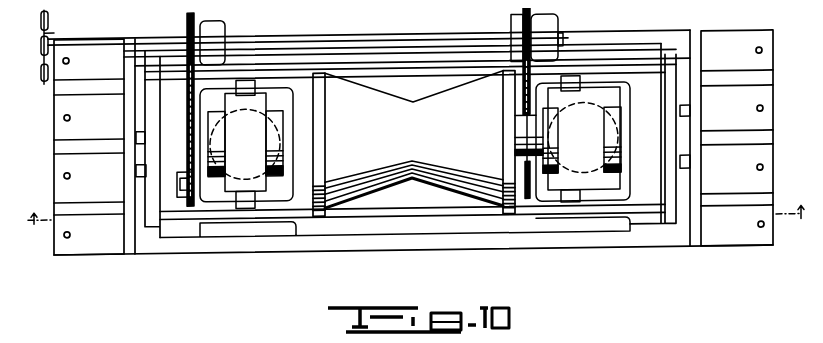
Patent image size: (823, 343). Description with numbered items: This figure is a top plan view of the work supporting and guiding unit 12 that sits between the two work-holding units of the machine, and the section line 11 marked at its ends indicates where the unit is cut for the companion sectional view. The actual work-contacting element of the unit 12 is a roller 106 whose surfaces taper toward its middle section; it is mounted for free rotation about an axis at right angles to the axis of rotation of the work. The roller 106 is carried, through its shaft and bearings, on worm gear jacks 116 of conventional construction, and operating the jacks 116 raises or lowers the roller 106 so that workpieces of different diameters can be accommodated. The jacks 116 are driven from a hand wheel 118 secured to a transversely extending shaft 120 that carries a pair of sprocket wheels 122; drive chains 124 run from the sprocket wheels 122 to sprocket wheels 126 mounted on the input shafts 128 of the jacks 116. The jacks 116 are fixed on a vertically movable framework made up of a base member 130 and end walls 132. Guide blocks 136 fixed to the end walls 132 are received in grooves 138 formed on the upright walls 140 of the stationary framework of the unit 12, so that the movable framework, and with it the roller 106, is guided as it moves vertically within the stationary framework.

The section line 11- 11 is at (417, 223).
The work supporting and guiding unit 12 is at (691, 25).
The roller 106 is at (421, 131).
The worm gear jacks 116 is at (283, 92).
The hand wheel 118 is at (38, 9).
The transversely extending shaft 120 is at (79, 35).
The sprocket wheels 122 is at (180, 10).
The drive chains 124 is at (180, 121).
The sprocket wheels 126 is at (189, 203).
The input shafts 128 is at (173, 175).
The base member 130 is at (403, 198).
The end walls 132 is at (144, 188).
The guide blocks 136 is at (128, 150).
The grooves 138 is at (130, 133).
The upright walls 140 is at (116, 243).